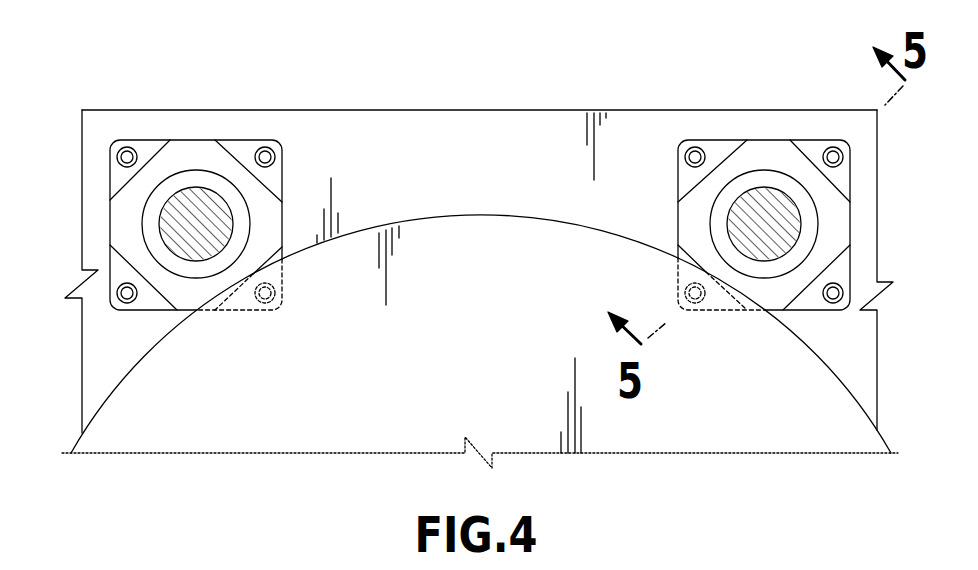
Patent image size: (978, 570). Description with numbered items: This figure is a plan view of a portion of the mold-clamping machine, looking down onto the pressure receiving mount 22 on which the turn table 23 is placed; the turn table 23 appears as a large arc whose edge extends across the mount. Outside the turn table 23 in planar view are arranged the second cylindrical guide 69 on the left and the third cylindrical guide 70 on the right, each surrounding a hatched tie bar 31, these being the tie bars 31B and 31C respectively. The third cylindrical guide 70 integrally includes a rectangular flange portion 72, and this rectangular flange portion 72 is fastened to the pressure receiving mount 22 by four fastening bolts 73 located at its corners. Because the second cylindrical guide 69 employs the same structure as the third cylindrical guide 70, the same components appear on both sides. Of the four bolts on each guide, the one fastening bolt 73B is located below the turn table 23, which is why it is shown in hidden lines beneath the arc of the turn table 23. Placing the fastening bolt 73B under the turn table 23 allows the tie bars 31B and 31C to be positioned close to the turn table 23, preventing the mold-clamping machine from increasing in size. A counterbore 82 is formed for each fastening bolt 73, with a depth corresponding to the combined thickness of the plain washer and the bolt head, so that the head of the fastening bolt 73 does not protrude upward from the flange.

The pressure receiving mount 22 is at (424, 130).
The turn table 23 is at (490, 247).
The tie bar 31 is at (229, 137).
The tie bar 31B is at (192, 222).
The tie bar 31C is at (764, 222).
The second cylindrical guide 69 is at (150, 254).
The third cylindrical guide 70 is at (811, 253).
The rectangular flange portion 72 is at (120, 222).
The fastening bolt 73 is at (127, 147).
The fastening bolt 73B is at (263, 303).
The counterbore 82 is at (150, 148).